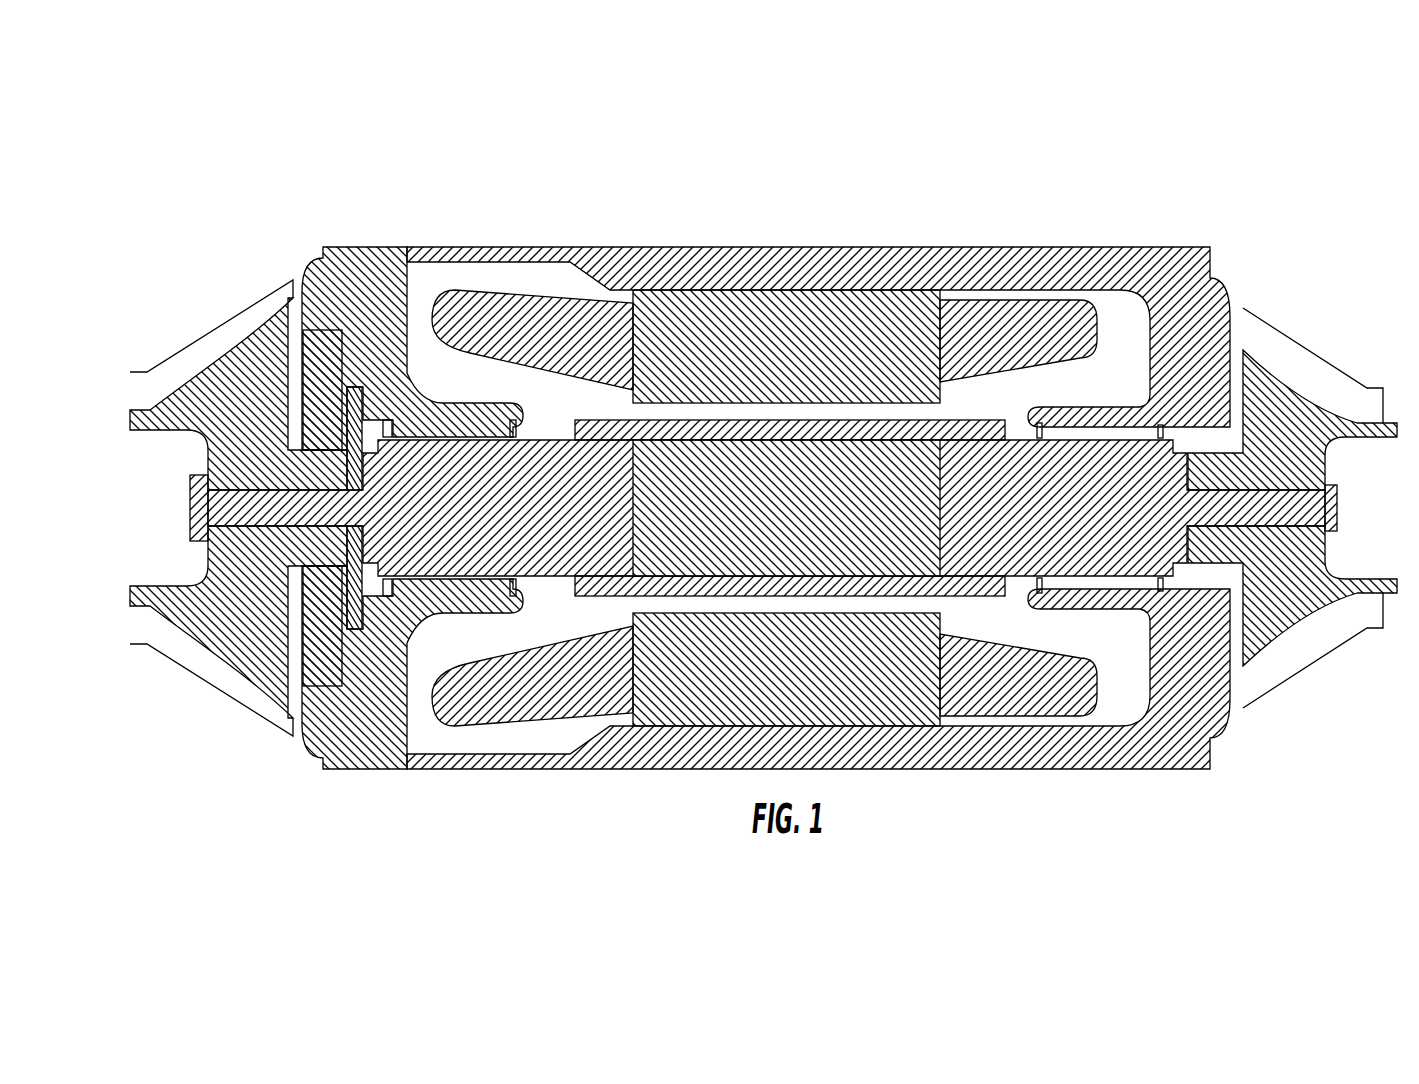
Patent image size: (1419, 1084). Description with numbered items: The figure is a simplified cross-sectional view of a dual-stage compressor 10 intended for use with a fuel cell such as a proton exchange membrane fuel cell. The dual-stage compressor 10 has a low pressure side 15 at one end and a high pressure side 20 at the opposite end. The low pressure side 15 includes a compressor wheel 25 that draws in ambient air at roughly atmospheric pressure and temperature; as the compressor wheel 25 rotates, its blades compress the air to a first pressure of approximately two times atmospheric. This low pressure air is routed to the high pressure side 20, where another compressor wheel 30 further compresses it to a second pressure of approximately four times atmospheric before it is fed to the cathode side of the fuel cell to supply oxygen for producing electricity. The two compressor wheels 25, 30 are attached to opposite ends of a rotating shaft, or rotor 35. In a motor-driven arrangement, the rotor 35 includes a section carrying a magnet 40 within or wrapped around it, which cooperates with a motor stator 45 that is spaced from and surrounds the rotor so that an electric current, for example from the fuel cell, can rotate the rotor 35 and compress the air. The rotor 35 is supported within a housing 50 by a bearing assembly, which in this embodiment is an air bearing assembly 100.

The dual-stage compressor 10 is at (307, 181).
The low pressure side 15 is at (307, 828).
The high pressure side 20 is at (1330, 720).
The compressor wheel 25 is at (253, 367).
The compressor wheel 30 is at (1280, 392).
The rotor 35 is at (378, 504).
The magnet 40 is at (655, 538).
The motor stator 45 is at (912, 306).
The housing 50 is at (1213, 290).
The air bearing assembly 100 is at (410, 583).